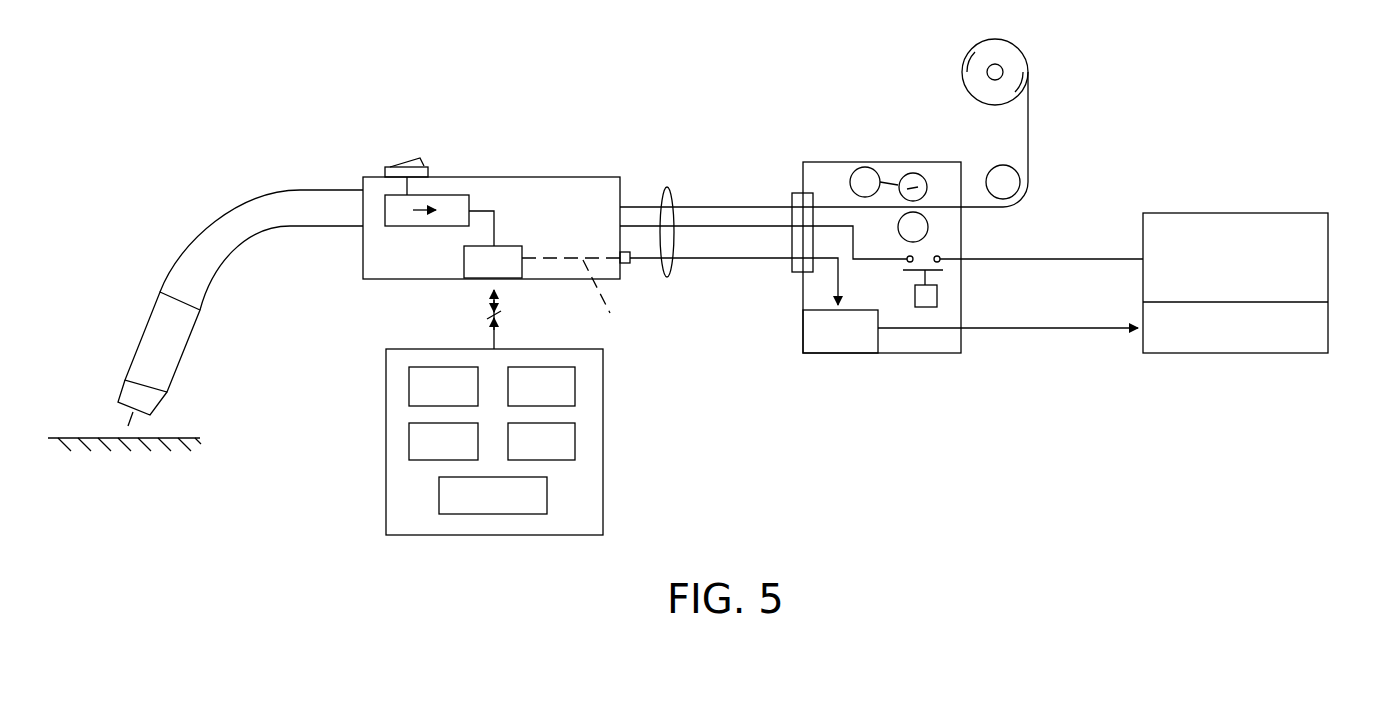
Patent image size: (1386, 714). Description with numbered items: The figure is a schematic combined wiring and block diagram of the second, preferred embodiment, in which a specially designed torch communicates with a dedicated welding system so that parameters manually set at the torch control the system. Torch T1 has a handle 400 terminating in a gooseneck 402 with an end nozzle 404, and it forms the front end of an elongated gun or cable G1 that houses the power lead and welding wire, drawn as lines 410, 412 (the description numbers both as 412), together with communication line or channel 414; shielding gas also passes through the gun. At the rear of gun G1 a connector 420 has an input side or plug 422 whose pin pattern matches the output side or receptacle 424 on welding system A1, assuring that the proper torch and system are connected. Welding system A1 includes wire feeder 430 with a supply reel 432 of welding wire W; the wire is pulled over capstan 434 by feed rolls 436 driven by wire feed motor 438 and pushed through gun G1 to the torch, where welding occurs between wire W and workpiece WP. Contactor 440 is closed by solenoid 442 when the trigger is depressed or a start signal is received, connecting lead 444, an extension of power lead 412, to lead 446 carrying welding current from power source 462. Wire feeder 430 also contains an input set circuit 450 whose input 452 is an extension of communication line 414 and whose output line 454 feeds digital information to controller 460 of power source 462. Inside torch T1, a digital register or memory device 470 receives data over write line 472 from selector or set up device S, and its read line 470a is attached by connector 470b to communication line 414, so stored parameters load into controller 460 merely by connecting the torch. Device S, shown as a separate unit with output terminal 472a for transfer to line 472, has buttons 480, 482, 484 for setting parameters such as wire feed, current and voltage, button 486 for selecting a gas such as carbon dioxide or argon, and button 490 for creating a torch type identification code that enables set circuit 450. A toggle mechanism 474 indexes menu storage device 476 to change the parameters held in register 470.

The torch T1 is at (207, 190).
The gooseneck 402 is at (257, 207).
The end nozzle 404 is at (187, 347).
The welding wire W is at (128, 425).
The workpiece WP is at (175, 436).
The handle 400 is at (547, 177).
The toggle mechanism 474 is at (408, 165).
The menu storage device 476 is at (458, 195).
The digital register 470 is at (485, 272).
The read line 470a is at (582, 302).
The connector 470b is at (626, 265).
The write line 472 is at (497, 298).
The output terminal 472a is at (493, 337).
The gun G1 is at (667, 190).
The wire conduit 410 is at (727, 207).
The power lead 412 is at (697, 225).
The communication line 414 is at (687, 258).
The connector 420 is at (792, 190).
The adapter 424 is at (813, 203).
The plug 422 is at (792, 232).
The input 452 is at (838, 282).
The lead 444 is at (882, 260).
The welding system A1 is at (870, 118).
The wire feeder 430 is at (945, 160).
The wire feed motor 438 is at (872, 173).
The feed rolls 436 is at (918, 227).
The supply reel 432 is at (1017, 52).
The capstan 434 is at (1013, 180).
The contactor 440 is at (935, 275).
The solenoid 442 is at (937, 297).
The lead 446 is at (1107, 258).
The input set circuit 450 is at (855, 357).
The output line 454 is at (940, 332).
The power source 462 is at (1295, 215).
The controller 460 is at (1293, 348).
The selector device S is at (385, 437).
The button 480 is at (413, 383).
The button 486 is at (573, 390).
The button 482 is at (410, 448).
The button 484 is at (570, 442).
The button 490 is at (475, 514).